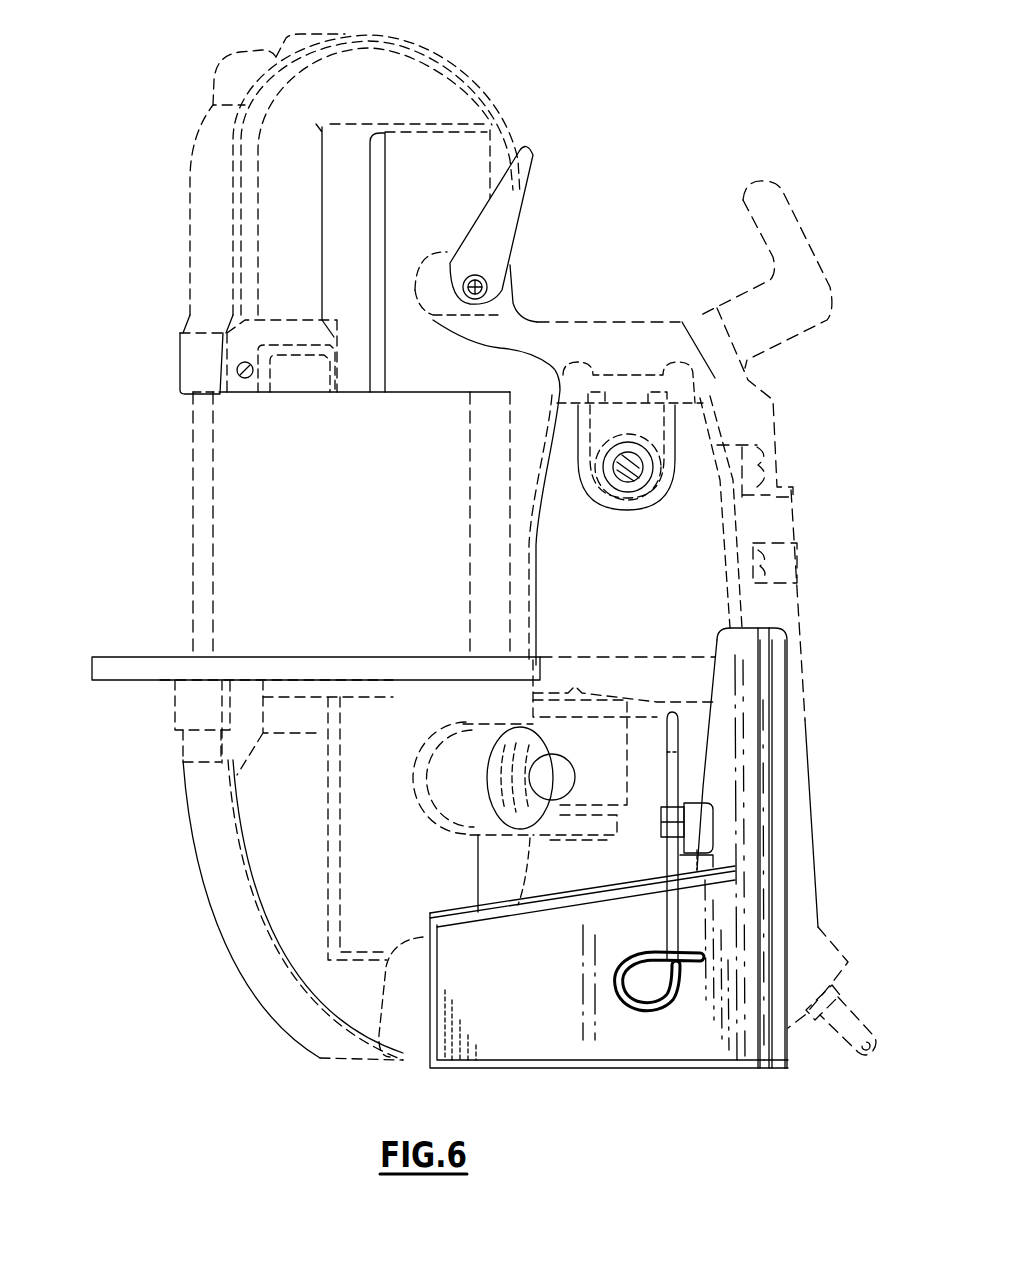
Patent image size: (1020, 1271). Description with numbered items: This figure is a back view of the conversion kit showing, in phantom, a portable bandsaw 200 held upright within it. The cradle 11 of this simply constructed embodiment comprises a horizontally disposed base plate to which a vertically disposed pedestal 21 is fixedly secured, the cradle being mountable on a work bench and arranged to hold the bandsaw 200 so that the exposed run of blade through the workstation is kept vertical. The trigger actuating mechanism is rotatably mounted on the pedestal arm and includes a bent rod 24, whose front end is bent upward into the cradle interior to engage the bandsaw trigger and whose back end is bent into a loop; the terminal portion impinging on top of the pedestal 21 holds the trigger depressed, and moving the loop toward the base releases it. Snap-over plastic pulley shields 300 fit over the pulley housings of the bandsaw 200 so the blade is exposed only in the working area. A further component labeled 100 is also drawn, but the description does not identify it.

The cradle 11 is at (793, 783).
The pedestal 21 is at (432, 1005).
The bent rod 24 is at (666, 912).
The mounting plate 100 is at (140, 686).
The portable bandsaw 200 is at (565, 320).
The pulley shields 300 is at (425, 44).